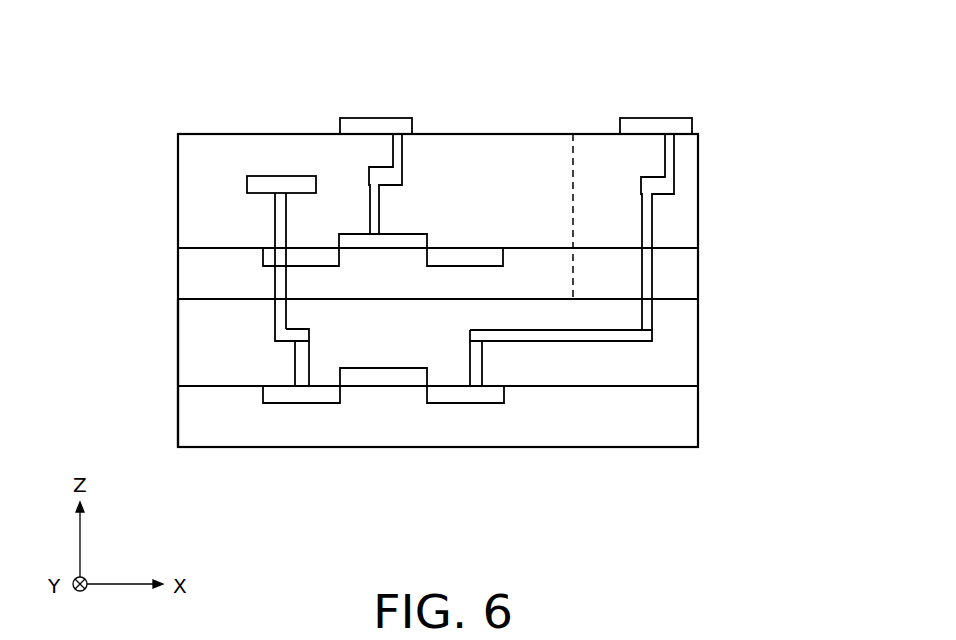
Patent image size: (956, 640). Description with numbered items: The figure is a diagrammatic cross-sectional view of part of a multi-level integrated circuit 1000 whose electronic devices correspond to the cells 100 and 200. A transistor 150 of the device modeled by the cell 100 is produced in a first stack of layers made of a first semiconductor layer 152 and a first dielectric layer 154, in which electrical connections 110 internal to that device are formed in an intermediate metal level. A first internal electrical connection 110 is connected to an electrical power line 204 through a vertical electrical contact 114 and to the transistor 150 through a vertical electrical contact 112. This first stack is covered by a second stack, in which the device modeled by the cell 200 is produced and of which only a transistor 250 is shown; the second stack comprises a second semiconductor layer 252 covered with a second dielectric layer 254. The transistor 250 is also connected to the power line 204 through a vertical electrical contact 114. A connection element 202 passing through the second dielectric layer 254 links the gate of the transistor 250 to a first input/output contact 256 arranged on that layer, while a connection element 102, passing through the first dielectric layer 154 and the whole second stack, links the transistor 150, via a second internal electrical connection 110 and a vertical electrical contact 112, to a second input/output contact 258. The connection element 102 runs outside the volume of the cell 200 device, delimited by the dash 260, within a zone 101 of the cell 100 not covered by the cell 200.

The multi-level integrated circuit 1000 is at (737, 143).
The cell 200 is at (165, 192).
The cell 100 is at (165, 358).
The second dielectric layer 254 is at (688, 217).
The second semiconductor layer 252 is at (688, 277).
The first dielectric layer 154 is at (688, 349).
The first semiconductor layer 152 is at (688, 417).
The first electrically conductive input/output contact 256 is at (375, 125).
The second electrically conductive input/output contact 258 is at (660, 125).
The electrical power line 204 is at (267, 187).
The connection element 202 is at (375, 205).
The transistor 250 is at (455, 238).
The dash 260 is at (572, 158).
The connection element 102 is at (647, 228).
The vertical electrical contact 114 is at (278, 227).
The internal electrical connection 110 is at (303, 337).
The vertical electrical contact 112 is at (295, 362).
The transistor 150 is at (385, 390).
The zone 101 is at (617, 358).